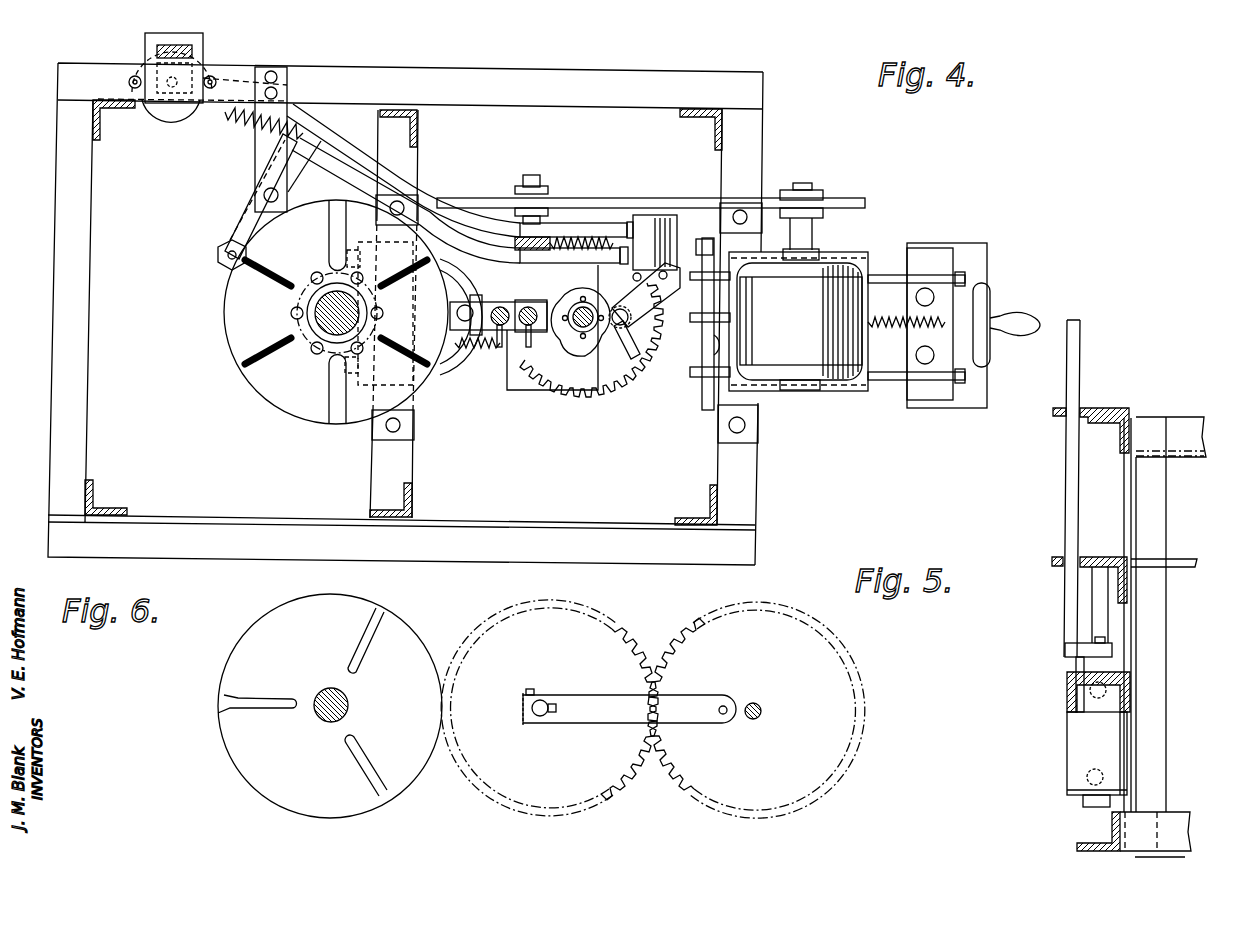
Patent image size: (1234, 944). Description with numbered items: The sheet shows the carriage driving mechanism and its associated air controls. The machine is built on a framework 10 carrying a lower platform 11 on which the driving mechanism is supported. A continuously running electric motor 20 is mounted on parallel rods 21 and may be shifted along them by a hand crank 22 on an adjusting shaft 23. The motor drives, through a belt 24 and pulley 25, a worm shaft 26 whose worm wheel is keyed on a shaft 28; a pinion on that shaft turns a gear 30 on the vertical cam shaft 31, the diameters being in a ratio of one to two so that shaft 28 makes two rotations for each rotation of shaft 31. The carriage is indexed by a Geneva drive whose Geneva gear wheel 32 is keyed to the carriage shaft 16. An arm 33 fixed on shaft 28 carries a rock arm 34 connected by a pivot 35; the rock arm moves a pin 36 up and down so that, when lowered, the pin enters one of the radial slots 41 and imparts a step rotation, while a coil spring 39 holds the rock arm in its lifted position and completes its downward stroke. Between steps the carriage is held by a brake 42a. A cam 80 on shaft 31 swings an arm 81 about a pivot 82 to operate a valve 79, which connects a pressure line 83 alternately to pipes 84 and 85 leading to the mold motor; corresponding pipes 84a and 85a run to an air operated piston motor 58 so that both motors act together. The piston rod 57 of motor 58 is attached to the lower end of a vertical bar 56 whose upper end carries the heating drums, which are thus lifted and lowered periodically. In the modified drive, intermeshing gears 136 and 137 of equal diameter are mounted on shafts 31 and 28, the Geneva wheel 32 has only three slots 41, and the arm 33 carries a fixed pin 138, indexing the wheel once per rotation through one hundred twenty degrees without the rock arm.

In FIG. 4, the framework 10 is at (765, 490).
In FIG. 4, the lower platform 11 is at (972, 250).
In FIG. 4, the vertical shaft 16 is at (312, 314).
In FIG. 6, the vertical shaft 16 is at (347, 703).
In FIG. 4, the electric motor 20 is at (827, 357).
In FIG. 4, the parallel rods 21 is at (888, 275).
In FIG. 4, the hand crank 22 is at (1018, 322).
In FIG. 4, the adjusting shaft 23 is at (884, 318).
In FIG. 4, the belt 24 is at (770, 203).
In FIG. 4, the pulley 25 is at (570, 197).
In FIG. 4, the worm shaft 26 is at (533, 178).
In FIG. 4, the shaft 28 is at (462, 312).
In FIG. 5, the shaft 28 is at (543, 702).
In FIG. 4, the gear 30 is at (632, 380).
In FIG. 4, the vertical cam shaft 31 is at (577, 330).
In FIG. 5, the vertical cam shaft 31 is at (758, 703).
In FIG. 4, the Geneva gear wheel 32 is at (277, 405).
In FIG. 6, the Geneva gear wheel 32 is at (288, 613).
In FIG. 4, the arm 33 is at (453, 318).
In FIG. 5, the arm 33 is at (605, 713).
In FIG. 4, the rock arm 34 is at (541, 302).
In FIG. 4, the pivot 35 is at (480, 296).
In FIG. 4, the pin 36 is at (530, 335).
In FIG. 4, the coil spring 39 is at (483, 350).
In FIG. 4, the radial slots 41 is at (237, 357).
In FIG. 6, the radial slots 41 is at (387, 615).
In FIG. 4, the brake 42a is at (230, 242).
In FIG. 4, the vertical bar 56 is at (176, 46).
In FIG. 4, the piston rod 57 is at (1100, 662).
In FIG. 4, the air operated piston motor 58 is at (170, 116).
In FIG. 4, the valve 79 is at (653, 228).
In FIG. 4, the cam 80 is at (583, 350).
In FIG. 4, the arm 81 is at (620, 298).
In FIG. 4, the pivot 82 is at (535, 284).
In FIG. 4, the pressure line 83 is at (702, 239).
In FIG. 4, the pipe 84 is at (613, 221).
In FIG. 4, the pipe 84a is at (478, 225).
In FIG. 4, the pipe 85 is at (597, 248).
In FIG. 4, the pipe 85a is at (417, 203).
In FIG. 5, the gear 136 is at (667, 650).
In FIG. 5, the gear 137 is at (610, 627).
In FIG. 5, the pin 138 is at (724, 715).